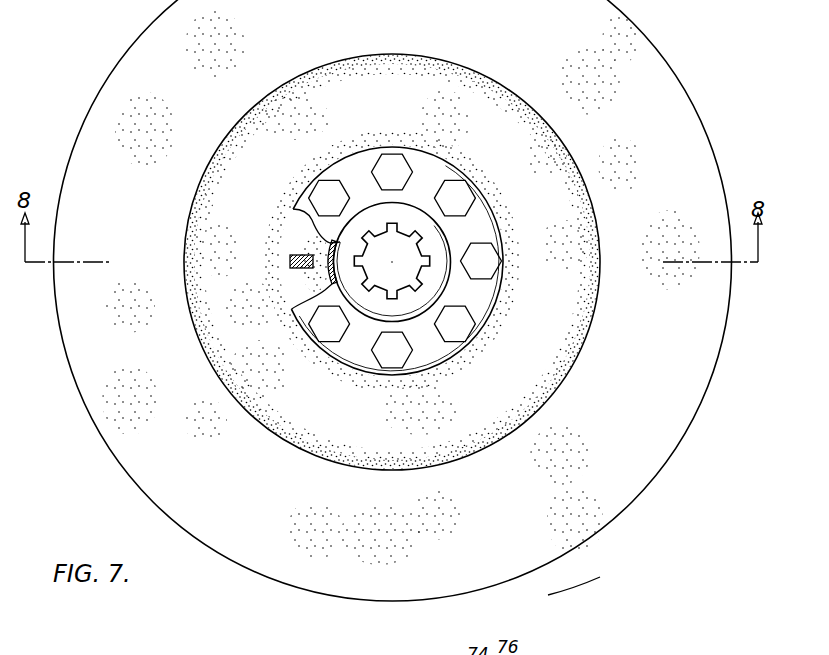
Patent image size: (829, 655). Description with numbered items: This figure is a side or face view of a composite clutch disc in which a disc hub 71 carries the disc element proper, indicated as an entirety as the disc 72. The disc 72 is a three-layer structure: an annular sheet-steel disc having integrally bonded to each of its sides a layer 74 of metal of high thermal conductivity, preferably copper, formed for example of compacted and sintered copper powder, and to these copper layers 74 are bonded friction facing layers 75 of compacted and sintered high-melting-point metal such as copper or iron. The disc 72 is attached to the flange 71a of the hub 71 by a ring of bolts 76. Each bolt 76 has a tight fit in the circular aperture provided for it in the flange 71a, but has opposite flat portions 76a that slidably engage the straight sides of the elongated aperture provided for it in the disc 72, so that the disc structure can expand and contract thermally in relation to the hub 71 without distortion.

The disc hub 71 is at (293, 210).
The flange 71a is at (488, 292).
The disc element 72 is at (678, 452).
The layer of high thermal conductivity metal 74 is at (560, 357).
The friction facing layer 75 is at (552, 533).
The bolt 76 is at (327, 192).
The flat portion 76a is at (302, 268).